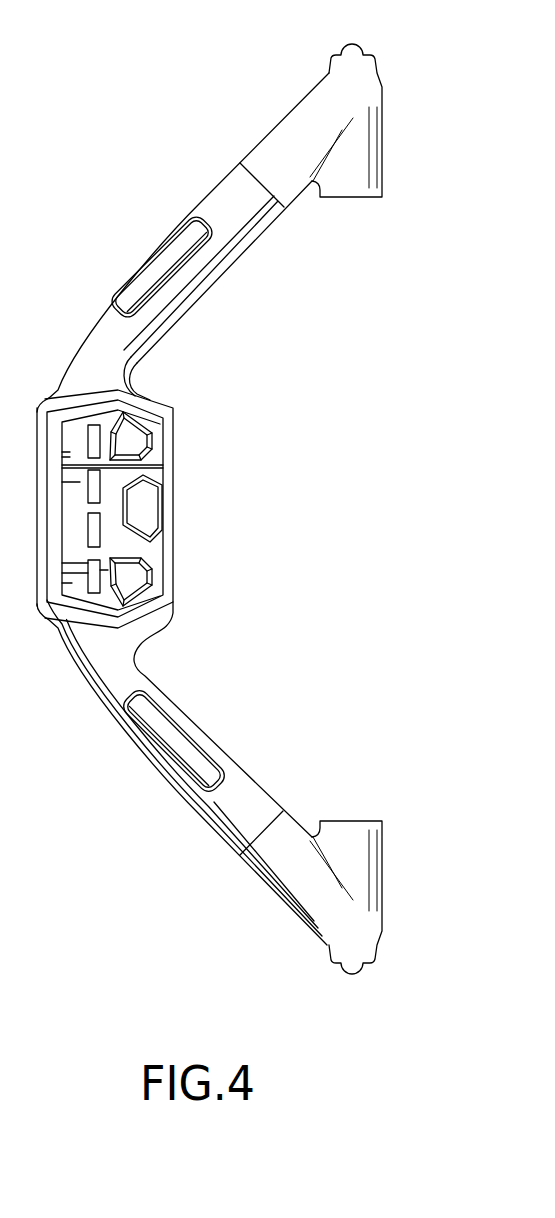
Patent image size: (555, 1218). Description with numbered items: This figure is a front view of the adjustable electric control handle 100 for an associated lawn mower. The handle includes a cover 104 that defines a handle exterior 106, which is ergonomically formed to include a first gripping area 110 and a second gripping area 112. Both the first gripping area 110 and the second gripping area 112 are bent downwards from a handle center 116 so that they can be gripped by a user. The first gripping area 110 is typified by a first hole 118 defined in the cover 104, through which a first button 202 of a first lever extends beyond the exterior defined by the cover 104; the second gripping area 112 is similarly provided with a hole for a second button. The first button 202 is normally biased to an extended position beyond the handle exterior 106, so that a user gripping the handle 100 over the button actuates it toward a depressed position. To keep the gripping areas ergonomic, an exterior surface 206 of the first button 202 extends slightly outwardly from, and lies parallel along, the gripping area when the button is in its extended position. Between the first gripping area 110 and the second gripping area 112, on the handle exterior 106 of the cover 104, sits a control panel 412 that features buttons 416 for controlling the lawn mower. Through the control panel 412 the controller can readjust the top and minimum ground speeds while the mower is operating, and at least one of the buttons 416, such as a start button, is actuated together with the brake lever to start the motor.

The adjustable electric control handle 100 is at (212, 487).
The cover 104 is at (85, 342).
The handle exterior 106 is at (72, 365).
The first gripping area 110 is at (150, 808).
The second gripping area 112 is at (167, 206).
The handle center 116 is at (185, 509).
The first hole 118 is at (200, 220).
The first button 202 is at (162, 265).
The exterior surface 206 is at (183, 270).
The control panel 412 is at (122, 477).
The buttons 416 is at (137, 443).